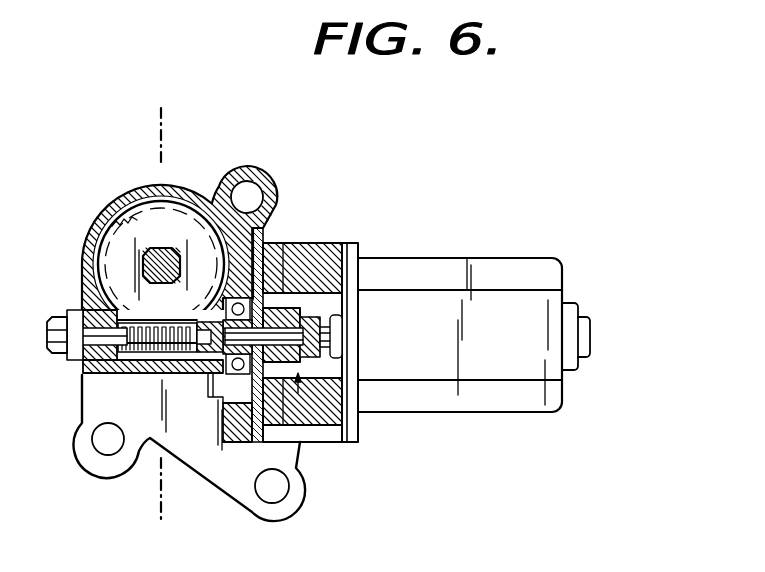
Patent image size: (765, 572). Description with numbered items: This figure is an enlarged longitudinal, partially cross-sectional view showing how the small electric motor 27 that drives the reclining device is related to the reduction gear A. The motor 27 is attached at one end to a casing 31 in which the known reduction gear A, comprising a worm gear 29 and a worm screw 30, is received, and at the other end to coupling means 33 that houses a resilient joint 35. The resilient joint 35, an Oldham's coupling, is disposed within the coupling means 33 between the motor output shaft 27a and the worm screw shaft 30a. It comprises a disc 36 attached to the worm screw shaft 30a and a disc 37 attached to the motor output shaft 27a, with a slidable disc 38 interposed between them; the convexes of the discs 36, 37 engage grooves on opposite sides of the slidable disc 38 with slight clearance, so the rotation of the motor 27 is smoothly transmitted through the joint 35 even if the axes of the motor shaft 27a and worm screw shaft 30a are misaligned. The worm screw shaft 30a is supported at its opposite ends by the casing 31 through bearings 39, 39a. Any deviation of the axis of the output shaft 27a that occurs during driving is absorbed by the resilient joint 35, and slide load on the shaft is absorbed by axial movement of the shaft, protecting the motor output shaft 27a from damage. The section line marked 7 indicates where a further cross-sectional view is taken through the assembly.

The section line 7- 7 is at (159, 316).
The reduction gear A is at (104, 190).
The electric motor 27 is at (500, 278).
The motor output shaft 27a is at (343, 352).
The worm gear 29 is at (172, 228).
The worm screw 30 is at (133, 352).
The worm screw shaft 30a is at (83, 348).
The casing 31 is at (96, 224).
The coupling means 33 is at (327, 250).
The resilient joint 35 is at (343, 440).
The disc 36 is at (238, 402).
The disc 37 is at (300, 305).
The slidable disc 38 is at (297, 425).
The bearing 39 is at (83, 313).
The bearing 39a is at (272, 255).